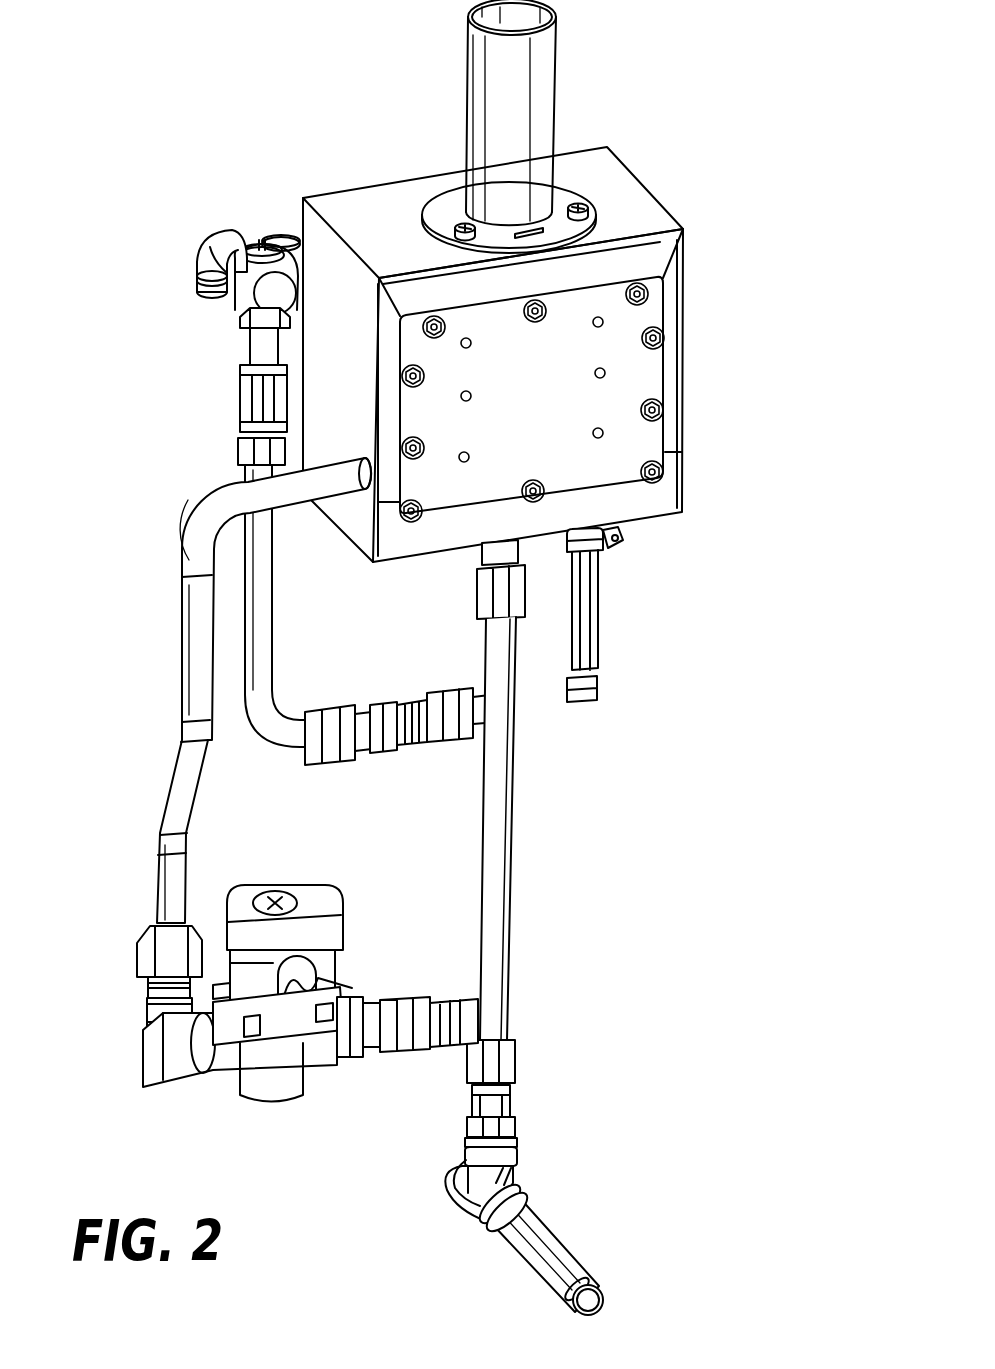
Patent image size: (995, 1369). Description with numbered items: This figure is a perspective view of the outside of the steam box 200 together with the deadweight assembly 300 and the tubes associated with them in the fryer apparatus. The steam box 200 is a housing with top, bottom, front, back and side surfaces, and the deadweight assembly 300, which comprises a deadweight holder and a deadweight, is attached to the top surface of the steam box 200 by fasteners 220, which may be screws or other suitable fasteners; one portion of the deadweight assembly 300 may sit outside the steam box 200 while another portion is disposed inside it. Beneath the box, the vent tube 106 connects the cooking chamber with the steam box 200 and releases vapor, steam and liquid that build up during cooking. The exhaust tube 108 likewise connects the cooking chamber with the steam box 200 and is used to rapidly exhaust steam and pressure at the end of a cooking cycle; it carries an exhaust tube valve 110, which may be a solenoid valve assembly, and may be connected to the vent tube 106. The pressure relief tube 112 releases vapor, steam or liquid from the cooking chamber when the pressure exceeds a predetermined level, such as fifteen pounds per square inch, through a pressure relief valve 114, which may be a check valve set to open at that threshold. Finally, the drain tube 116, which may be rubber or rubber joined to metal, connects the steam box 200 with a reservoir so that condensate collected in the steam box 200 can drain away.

The deadweight assembly 300 is at (545, 92).
The fasteners 220 is at (582, 200).
The steam box 200 is at (637, 382).
The pressure relief valve 114 is at (262, 242).
The pressure relief tube 112 is at (263, 622).
The drain tube 116 is at (588, 620).
The exhaust tube 108 is at (190, 768).
The vent tube 106 is at (500, 855).
The exhaust tube valve 110 is at (288, 988).